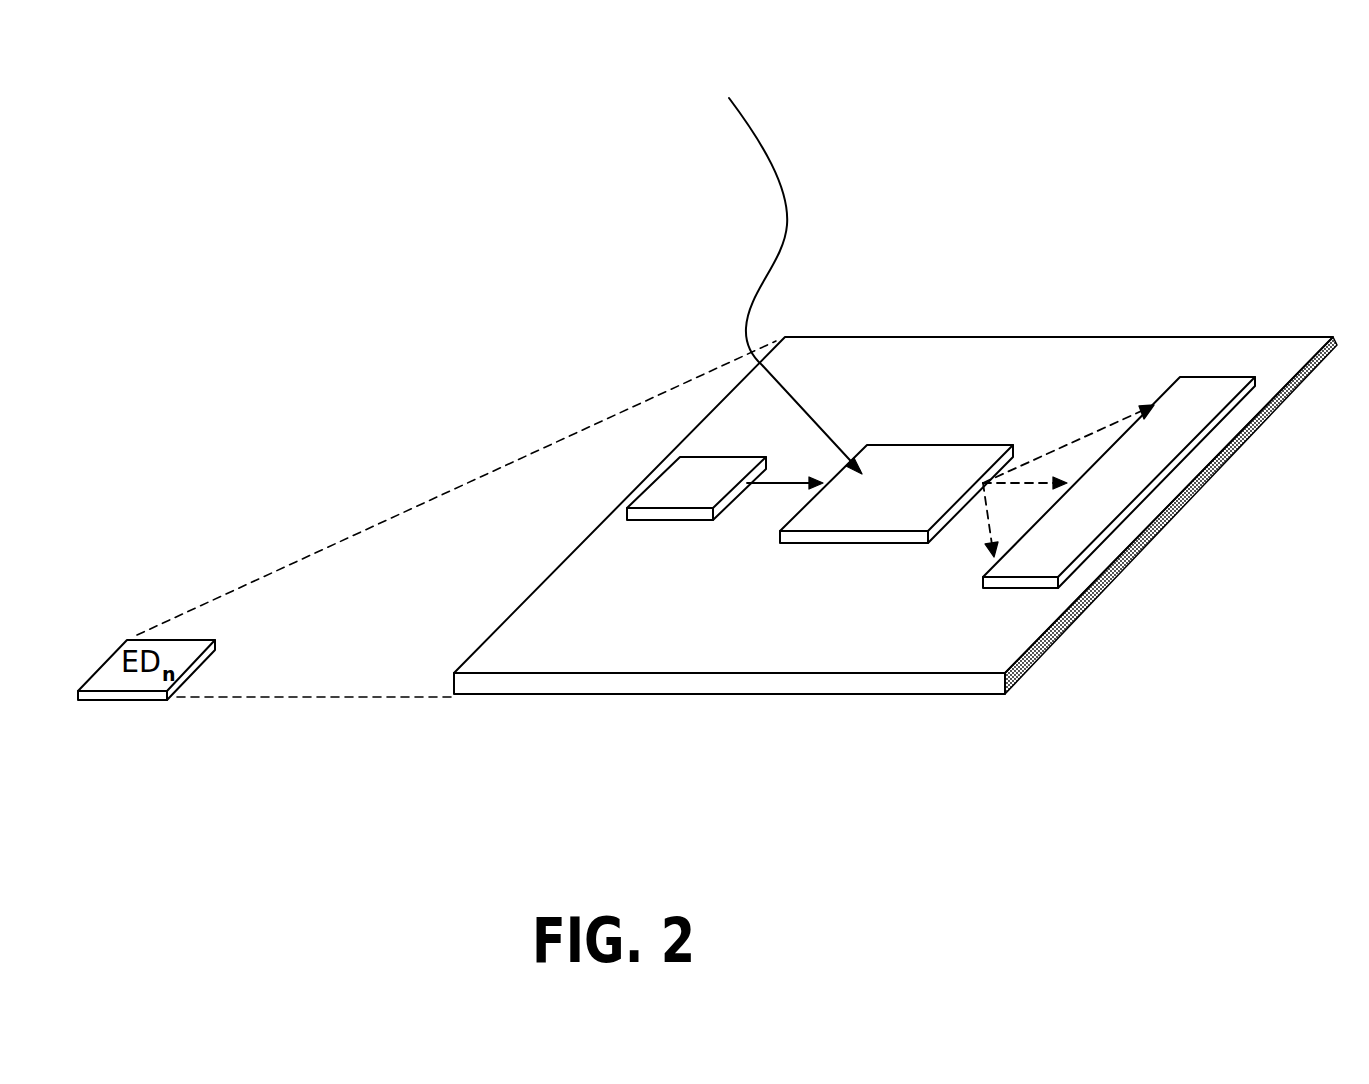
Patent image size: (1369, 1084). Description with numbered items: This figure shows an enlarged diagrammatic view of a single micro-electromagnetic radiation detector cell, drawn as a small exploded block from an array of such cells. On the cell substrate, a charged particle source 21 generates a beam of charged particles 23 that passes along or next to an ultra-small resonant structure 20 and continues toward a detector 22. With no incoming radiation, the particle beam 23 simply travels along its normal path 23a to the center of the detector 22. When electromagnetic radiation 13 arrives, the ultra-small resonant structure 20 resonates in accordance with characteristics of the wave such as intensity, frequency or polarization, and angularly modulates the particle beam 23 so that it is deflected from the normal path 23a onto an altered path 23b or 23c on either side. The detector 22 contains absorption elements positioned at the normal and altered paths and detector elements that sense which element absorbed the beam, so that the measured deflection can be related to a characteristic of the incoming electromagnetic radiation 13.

The electromagnetic radiation 13 is at (795, 153).
The ultra-small resonant structure 20 is at (916, 499).
The charged particle source 21 is at (711, 498).
The detector 22 is at (1145, 486).
The particle beam 23 is at (765, 504).
The normal path 23a is at (1040, 465).
The altered path 23b is at (1105, 396).
The altered path 23c is at (958, 541).